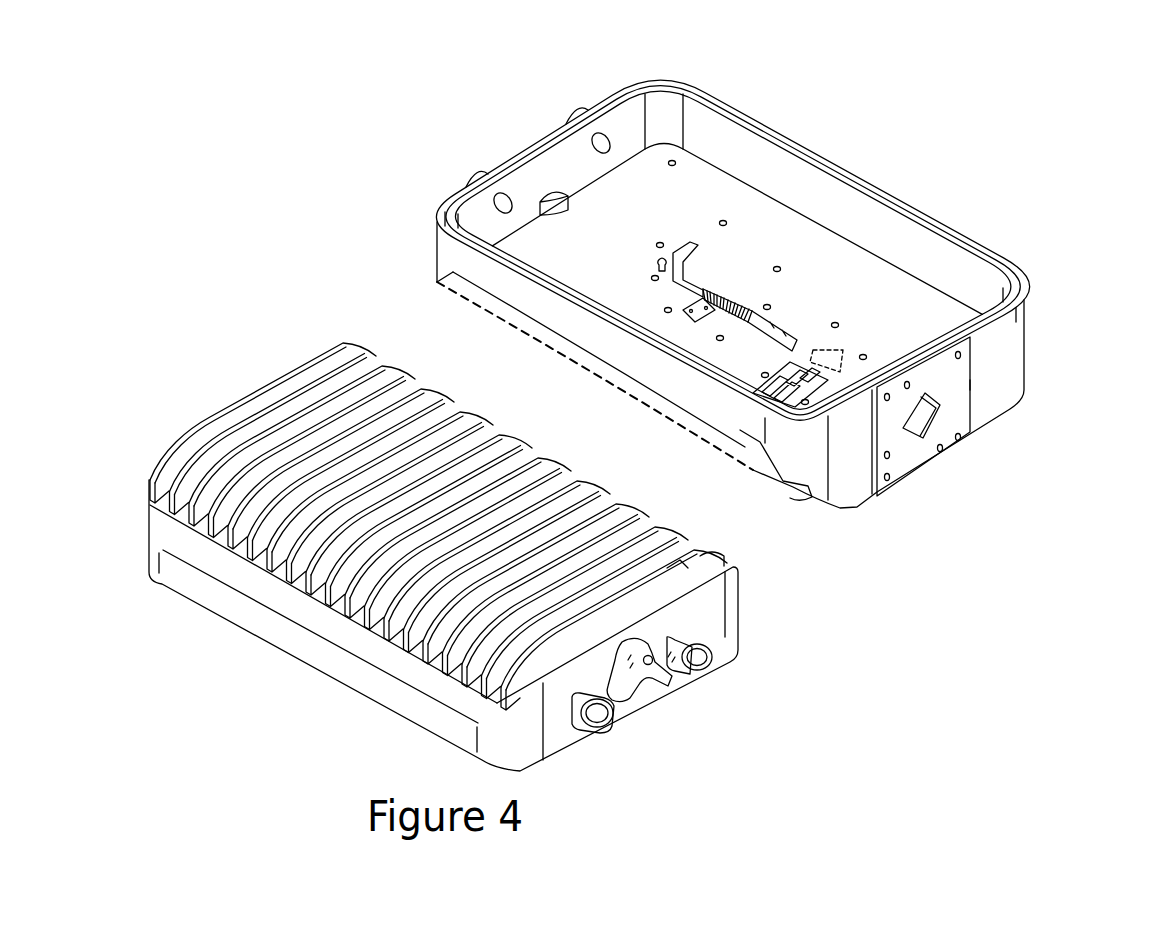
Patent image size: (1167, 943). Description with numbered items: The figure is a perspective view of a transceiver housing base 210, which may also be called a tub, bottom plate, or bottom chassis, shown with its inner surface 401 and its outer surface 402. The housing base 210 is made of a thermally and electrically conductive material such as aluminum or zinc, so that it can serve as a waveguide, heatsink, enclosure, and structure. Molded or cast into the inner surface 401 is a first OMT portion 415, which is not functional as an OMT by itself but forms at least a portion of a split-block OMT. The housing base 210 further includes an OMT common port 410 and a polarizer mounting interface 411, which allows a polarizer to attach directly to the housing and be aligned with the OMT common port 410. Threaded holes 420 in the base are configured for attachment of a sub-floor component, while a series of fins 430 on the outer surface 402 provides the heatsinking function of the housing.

The housing base 210 is at (876, 56).
The inner surface 401 is at (753, 316).
The outer surface 402 is at (400, 683).
The OMT common port 410 is at (1020, 535).
The polarizer mounting interface 411 is at (1043, 433).
The first OMT portion 415 is at (943, 127).
The threaded holes 420 is at (652, 240).
The series of fins 430 is at (676, 571).